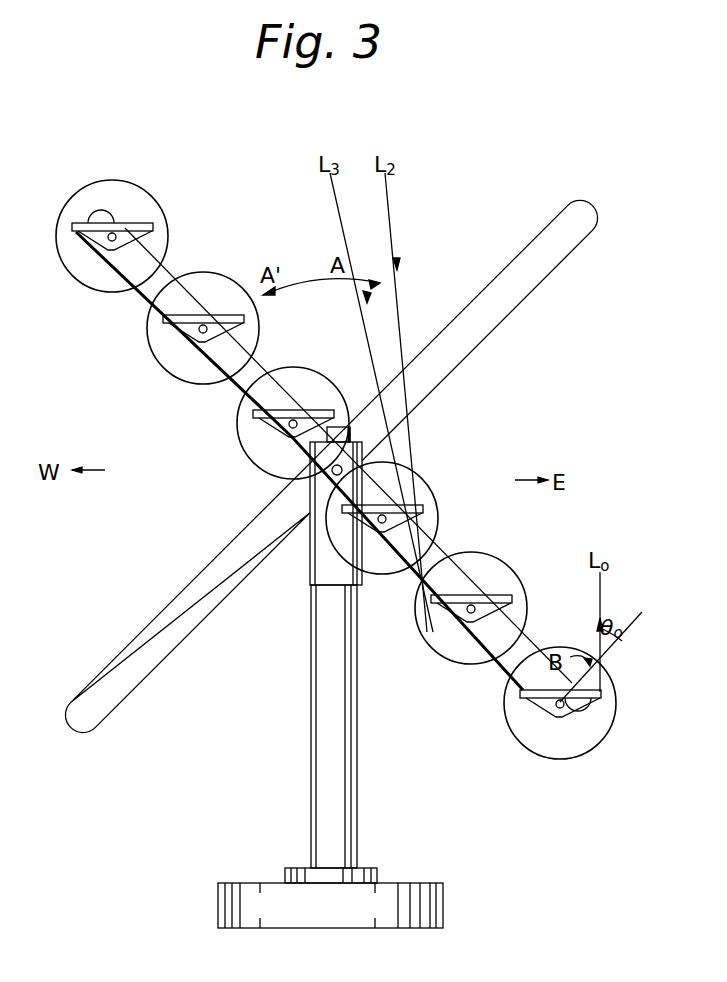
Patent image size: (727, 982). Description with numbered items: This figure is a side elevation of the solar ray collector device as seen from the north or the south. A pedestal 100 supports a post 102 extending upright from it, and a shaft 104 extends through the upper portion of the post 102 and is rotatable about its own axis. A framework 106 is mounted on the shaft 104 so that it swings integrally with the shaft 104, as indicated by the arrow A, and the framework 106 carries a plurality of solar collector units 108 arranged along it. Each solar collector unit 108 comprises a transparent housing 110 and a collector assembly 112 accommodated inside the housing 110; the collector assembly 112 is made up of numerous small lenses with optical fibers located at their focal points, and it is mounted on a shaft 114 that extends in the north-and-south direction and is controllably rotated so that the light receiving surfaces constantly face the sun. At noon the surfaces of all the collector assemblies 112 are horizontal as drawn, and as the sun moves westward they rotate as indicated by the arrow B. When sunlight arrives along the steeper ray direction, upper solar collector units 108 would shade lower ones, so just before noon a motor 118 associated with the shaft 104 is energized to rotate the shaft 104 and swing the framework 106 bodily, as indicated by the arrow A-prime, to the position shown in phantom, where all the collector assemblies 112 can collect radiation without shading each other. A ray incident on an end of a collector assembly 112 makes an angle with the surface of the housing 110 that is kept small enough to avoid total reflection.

The pedestal 100 is at (443, 906).
The post 102 is at (311, 746).
The shaft 104 is at (308, 484).
The framework 106 is at (512, 311).
The solar collector unit 108 is at (140, 185).
The transparent housing 110 is at (166, 222).
The collector assembly 112 is at (72, 228).
The shaft 114 is at (108, 241).
The motor 118 is at (346, 427).